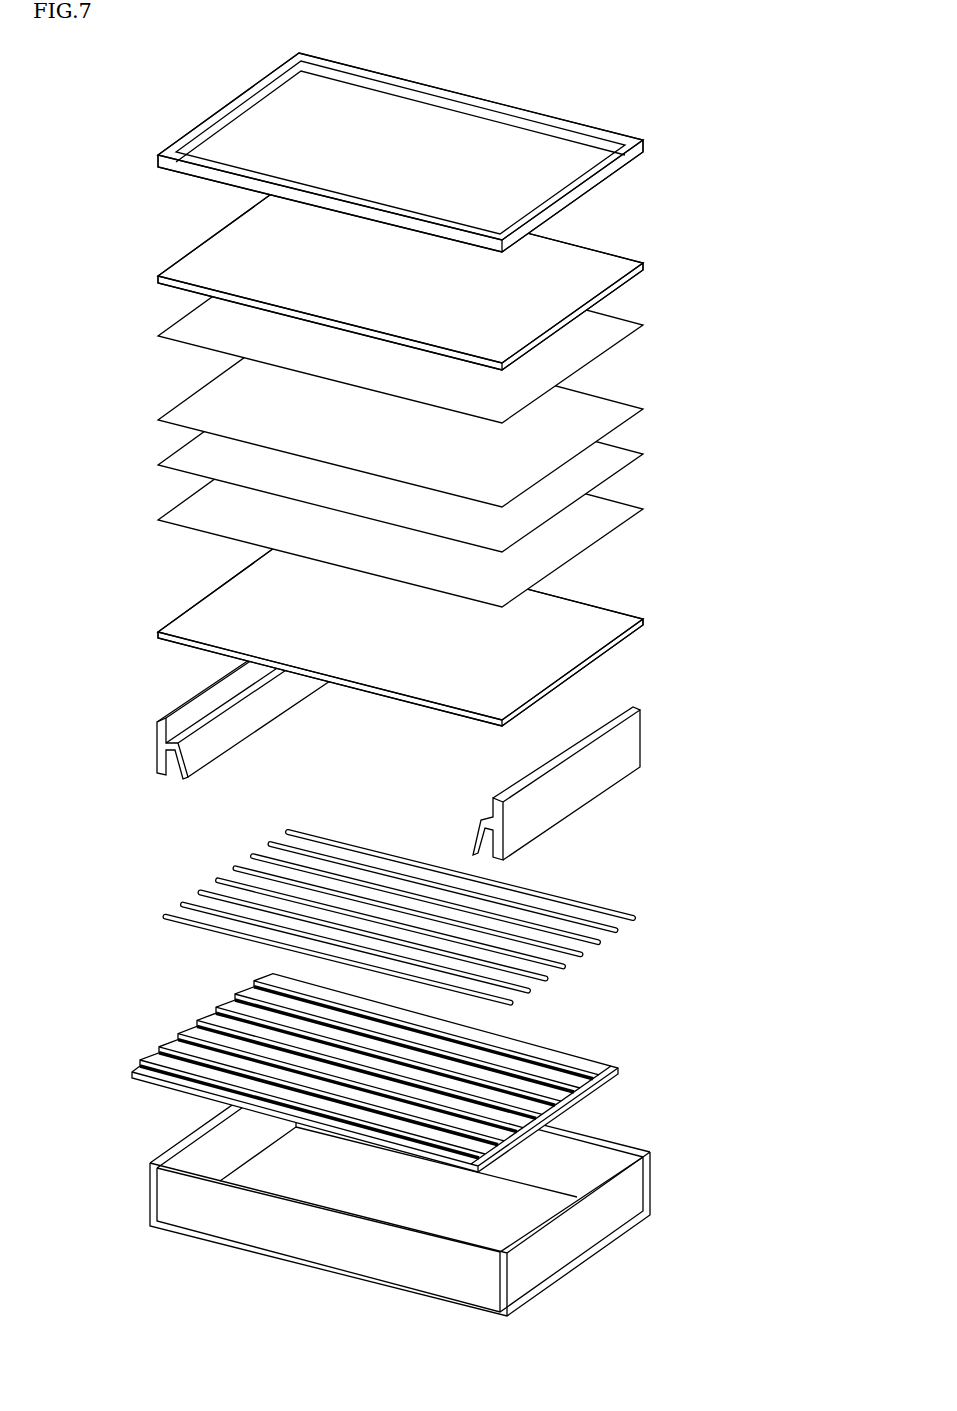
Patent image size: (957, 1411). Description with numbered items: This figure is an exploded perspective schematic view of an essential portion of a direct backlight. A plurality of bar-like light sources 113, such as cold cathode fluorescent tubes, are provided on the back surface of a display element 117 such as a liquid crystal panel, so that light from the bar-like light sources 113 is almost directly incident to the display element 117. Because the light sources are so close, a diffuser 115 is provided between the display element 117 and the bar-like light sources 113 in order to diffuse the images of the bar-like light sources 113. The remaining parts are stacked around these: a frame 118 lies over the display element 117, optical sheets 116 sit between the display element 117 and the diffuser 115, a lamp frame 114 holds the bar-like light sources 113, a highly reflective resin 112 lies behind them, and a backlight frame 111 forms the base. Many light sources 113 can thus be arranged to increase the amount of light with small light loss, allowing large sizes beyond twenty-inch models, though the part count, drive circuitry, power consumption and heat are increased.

The backlight frame 111 is at (645, 1170).
The highly reflective resin 112 is at (616, 1065).
The bar-like light sources 113 is at (602, 921).
The lamp frame 114 is at (590, 773).
The diffuser 115 is at (593, 627).
The optical sheets 116 is at (648, 320).
The display element 117 is at (593, 264).
The frame 118 is at (637, 153).